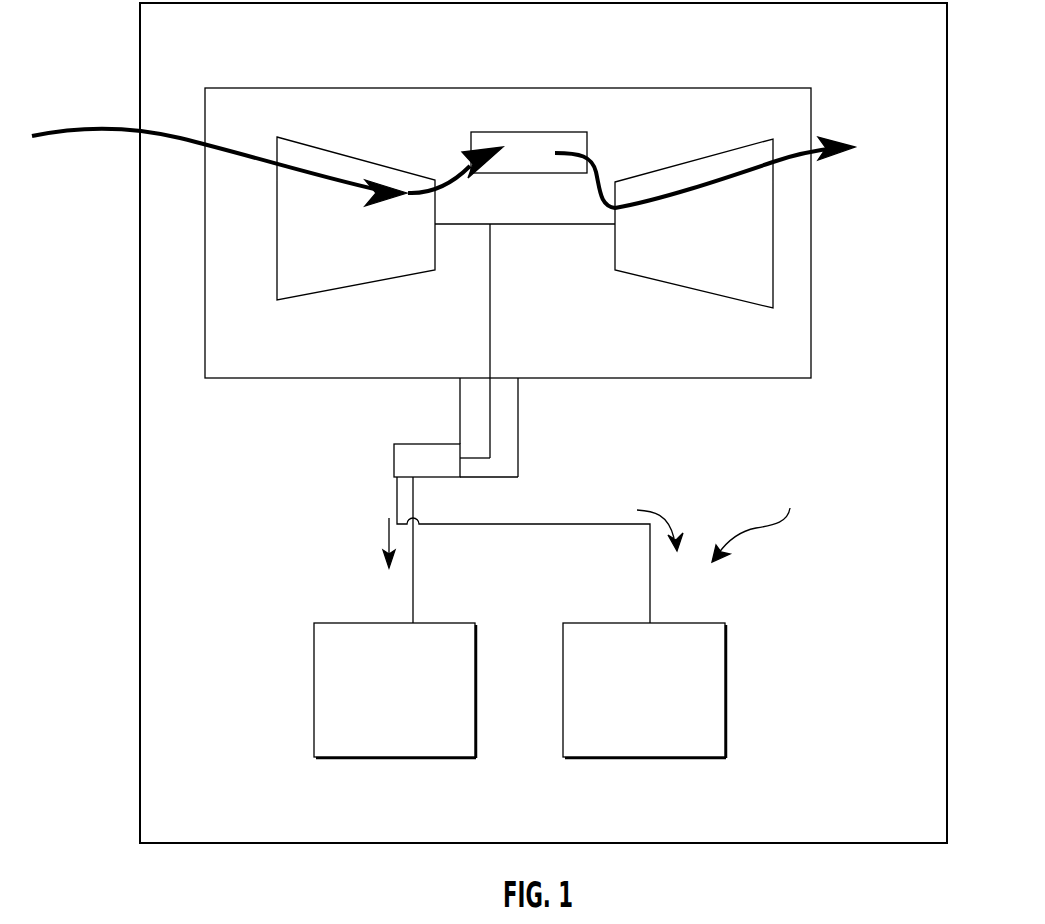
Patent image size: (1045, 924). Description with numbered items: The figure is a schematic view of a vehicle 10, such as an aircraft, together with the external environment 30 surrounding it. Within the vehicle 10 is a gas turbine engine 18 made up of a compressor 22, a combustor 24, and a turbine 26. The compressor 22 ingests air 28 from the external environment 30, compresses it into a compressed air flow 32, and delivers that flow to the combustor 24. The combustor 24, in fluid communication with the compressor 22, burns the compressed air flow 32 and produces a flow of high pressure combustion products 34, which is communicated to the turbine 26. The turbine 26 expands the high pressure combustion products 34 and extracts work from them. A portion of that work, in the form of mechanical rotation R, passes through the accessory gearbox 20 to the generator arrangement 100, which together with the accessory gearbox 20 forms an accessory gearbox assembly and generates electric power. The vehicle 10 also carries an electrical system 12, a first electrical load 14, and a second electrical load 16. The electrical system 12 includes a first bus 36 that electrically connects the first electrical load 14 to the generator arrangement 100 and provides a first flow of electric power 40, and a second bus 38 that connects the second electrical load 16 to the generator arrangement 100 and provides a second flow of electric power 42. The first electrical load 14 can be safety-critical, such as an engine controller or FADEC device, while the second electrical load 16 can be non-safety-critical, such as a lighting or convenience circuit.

The vehicle 10 is at (140, 180).
The electrical system 12 is at (757, 522).
The first electrical load 14 is at (333, 623).
The second electrical load 16 is at (600, 623).
The gas turbine engine 18 is at (713, 88).
The accessory gearbox 20 is at (518, 462).
The compressor 22 is at (346, 296).
The combustor 24 is at (553, 132).
The turbine 26 is at (647, 283).
The air 28 is at (63, 136).
The external environment 30 is at (72, 386).
The compressed air flow 32 is at (460, 178).
The flow of high pressure combustion products 34 is at (738, 175).
The first bus 36 is at (413, 587).
The second bus 38 is at (573, 524).
The first flow of electric power 40 is at (388, 538).
The second flow of electric power 42 is at (670, 507).
The generator arrangement 100 is at (420, 444).
The mechanical rotation R is at (522, 212).